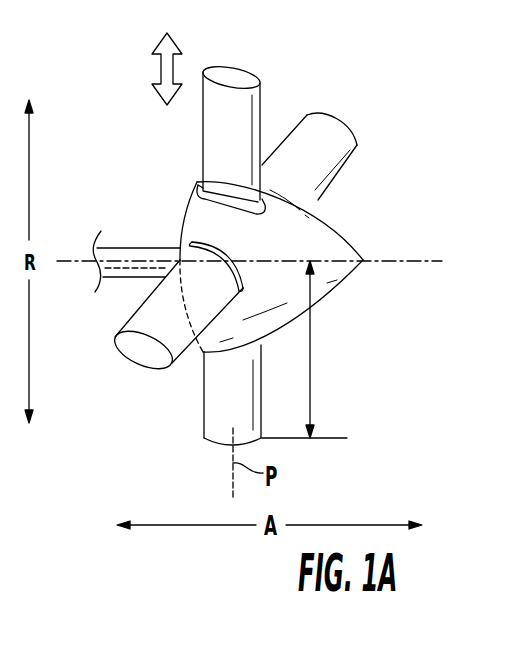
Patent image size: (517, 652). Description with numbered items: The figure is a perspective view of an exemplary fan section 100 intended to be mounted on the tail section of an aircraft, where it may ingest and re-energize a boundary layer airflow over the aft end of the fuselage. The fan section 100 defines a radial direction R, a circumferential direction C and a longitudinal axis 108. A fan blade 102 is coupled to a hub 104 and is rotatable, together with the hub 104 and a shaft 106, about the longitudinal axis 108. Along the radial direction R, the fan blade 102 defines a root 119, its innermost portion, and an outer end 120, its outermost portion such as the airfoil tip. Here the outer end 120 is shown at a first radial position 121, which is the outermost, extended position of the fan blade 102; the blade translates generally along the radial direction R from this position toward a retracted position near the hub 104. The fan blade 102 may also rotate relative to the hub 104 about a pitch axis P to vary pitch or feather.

The fan section 100 is at (329, 57).
The fan blade 102 is at (320, 147).
The hub 104 is at (327, 242).
The shaft 106 is at (150, 245).
The longitudinal axis 108 is at (402, 265).
The root 119 is at (265, 200).
The outer end 120 is at (227, 73).
The first radial position 121 is at (310, 350).